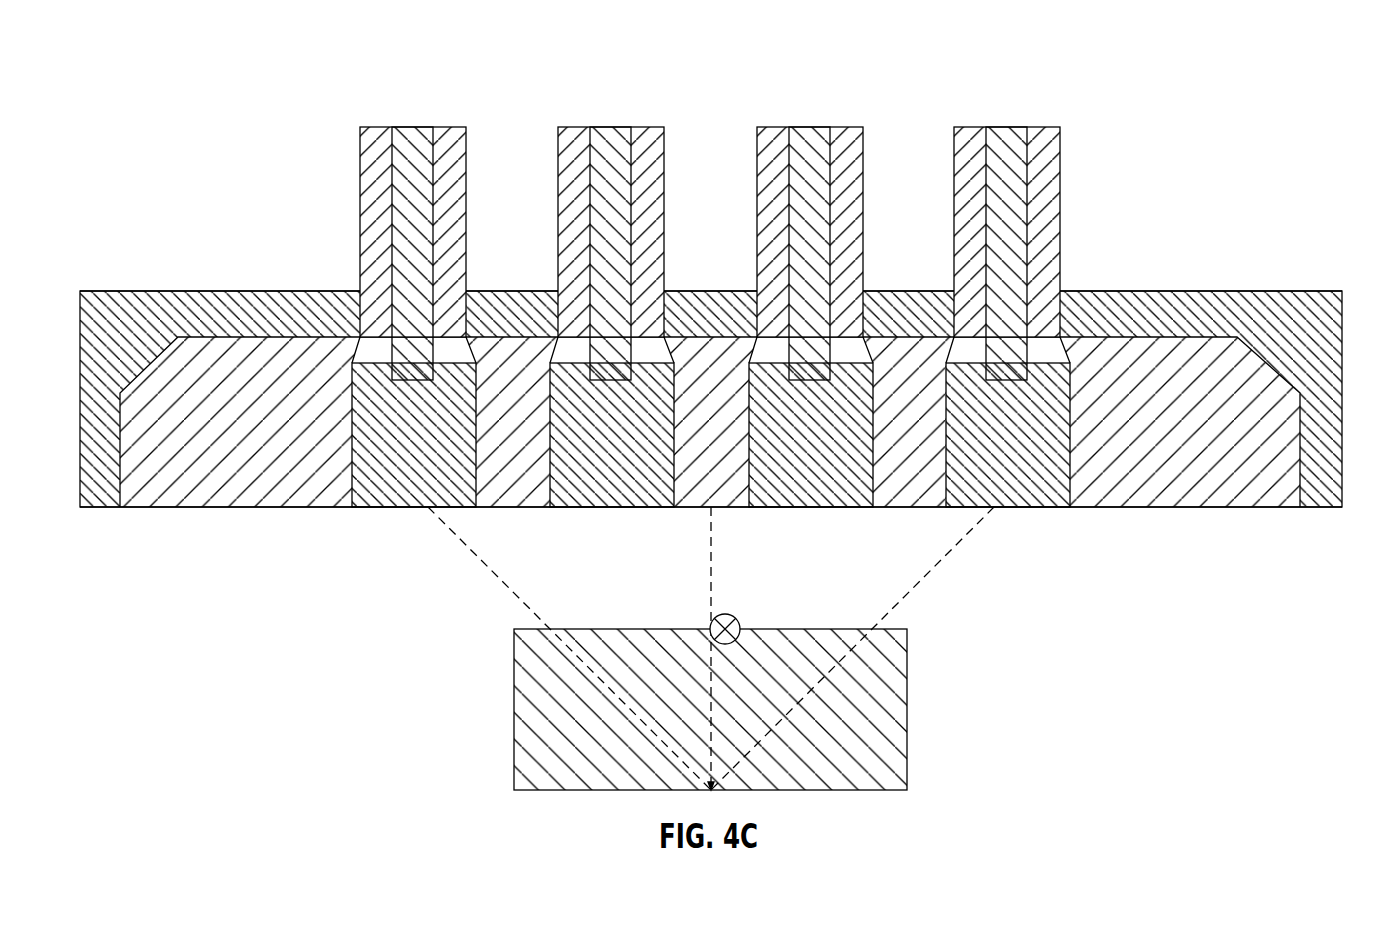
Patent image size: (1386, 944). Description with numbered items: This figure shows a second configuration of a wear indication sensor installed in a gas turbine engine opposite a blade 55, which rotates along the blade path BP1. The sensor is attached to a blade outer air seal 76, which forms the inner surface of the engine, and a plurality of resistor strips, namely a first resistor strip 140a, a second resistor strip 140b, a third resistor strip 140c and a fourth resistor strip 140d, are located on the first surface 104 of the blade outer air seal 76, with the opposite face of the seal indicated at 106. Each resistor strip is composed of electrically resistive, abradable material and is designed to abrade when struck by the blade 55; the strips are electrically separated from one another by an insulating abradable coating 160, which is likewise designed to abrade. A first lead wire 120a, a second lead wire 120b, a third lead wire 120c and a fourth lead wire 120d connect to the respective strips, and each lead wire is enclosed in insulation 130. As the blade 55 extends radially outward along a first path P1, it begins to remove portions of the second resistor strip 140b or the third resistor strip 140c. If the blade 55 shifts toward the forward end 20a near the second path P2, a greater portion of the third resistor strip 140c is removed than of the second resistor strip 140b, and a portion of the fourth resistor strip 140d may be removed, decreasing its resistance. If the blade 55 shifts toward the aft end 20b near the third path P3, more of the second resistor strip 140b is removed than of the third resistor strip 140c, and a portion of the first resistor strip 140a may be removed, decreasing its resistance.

The forward end 20a is at (1298, 201).
The aft end 20b is at (108, 201).
The blade 55 is at (765, 717).
The blade outer air seal 76 is at (1108, 293).
The first surface 104 is at (216, 509).
The top surface 106 is at (237, 281).
The first lead wire 120a is at (371, 219).
The second lead wire 120b is at (613, 133).
The third lead wire 120c is at (812, 133).
The fourth lead wire 120d is at (1009, 133).
The insulation 130 is at (362, 198).
The first resistor strip 140a is at (412, 460).
The second resistor strip 140b is at (610, 460).
The third resistor strip 140c is at (808, 460).
The fourth resistor strip 140d is at (1008, 460).
The insulating abradable coating 160 is at (1177, 497).
The first path P1 is at (711, 582).
The second path P2 is at (922, 578).
The third path P3 is at (510, 588).
The blade path BP1 is at (738, 620).